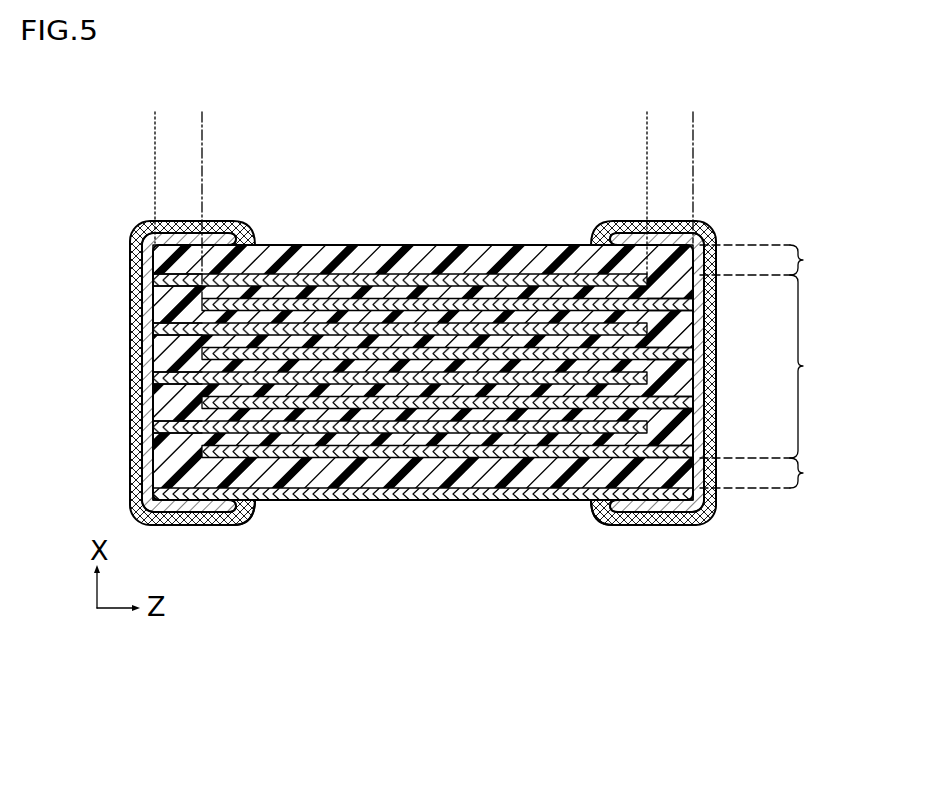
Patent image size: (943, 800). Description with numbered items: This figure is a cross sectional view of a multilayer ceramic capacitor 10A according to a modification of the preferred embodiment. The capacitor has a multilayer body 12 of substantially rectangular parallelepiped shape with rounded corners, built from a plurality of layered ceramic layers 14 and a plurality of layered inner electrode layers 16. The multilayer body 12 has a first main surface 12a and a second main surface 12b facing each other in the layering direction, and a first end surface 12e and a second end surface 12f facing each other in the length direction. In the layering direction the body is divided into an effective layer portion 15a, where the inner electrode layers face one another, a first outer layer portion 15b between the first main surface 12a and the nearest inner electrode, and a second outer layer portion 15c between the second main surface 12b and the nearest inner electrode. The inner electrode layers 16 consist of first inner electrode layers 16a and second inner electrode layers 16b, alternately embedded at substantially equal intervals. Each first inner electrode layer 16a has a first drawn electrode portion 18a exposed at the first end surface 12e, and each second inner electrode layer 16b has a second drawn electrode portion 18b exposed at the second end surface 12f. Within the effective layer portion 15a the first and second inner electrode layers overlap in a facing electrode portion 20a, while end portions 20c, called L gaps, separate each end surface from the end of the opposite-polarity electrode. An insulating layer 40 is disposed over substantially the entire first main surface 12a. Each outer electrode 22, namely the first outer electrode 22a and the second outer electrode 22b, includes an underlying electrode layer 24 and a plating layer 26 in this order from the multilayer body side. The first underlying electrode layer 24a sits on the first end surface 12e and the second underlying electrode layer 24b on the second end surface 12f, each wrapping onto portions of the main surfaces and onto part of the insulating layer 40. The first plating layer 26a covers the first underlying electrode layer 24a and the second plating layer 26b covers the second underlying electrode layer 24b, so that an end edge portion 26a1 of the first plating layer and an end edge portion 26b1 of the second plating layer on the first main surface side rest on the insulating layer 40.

The multilayer ceramic capacitor 10A is at (106, 201).
The multilayer body 12 is at (461, 240).
The first main surface 12a is at (472, 500).
The second main surface 12b is at (422, 244).
The first end surface 12e is at (153, 354).
The second end surface 12f is at (694, 372).
The ceramic layers 14 is at (503, 316).
The effective layer portion 15a is at (819, 366).
The first outer layer portion 15b is at (805, 473).
The second outer layer portion 15c is at (805, 260).
The inner electrode layers 16 is at (221, 677).
The first inner electrode layers 16a is at (317, 328).
The second inner electrode layers 16b is at (371, 357).
The first drawn electrode portion 18a is at (180, 327).
The second drawn electrode portion 18b is at (683, 353).
The facing electrode portion 20a is at (647, 112).
The end portions 20c is at (202, 112).
The outer electrode 22 is at (351, 677).
The first outer electrode 22a is at (315, 166).
The second outer electrode 22b is at (638, 166).
The underlying electrode layer 24 is at (483, 677).
The first underlying electrode layer 24a is at (205, 237).
The second underlying electrode layer 24b is at (615, 234).
The plating layer 26 is at (612, 677).
The first plating layer 26a is at (228, 224).
The second plating layer 26b is at (628, 224).
The end edge portion 26a1 is at (257, 503).
The end edge portion 26b1 is at (593, 503).
The insulating layer 40 is at (313, 499).